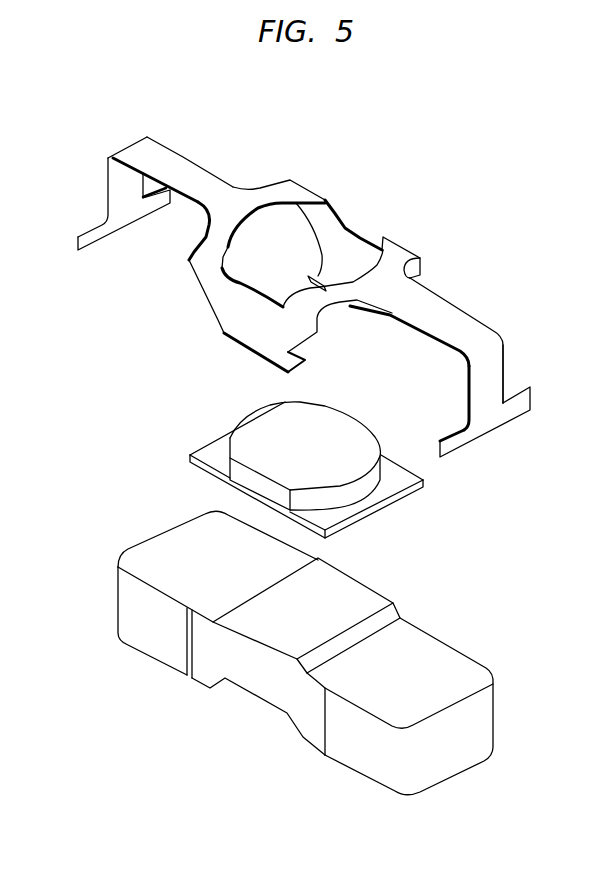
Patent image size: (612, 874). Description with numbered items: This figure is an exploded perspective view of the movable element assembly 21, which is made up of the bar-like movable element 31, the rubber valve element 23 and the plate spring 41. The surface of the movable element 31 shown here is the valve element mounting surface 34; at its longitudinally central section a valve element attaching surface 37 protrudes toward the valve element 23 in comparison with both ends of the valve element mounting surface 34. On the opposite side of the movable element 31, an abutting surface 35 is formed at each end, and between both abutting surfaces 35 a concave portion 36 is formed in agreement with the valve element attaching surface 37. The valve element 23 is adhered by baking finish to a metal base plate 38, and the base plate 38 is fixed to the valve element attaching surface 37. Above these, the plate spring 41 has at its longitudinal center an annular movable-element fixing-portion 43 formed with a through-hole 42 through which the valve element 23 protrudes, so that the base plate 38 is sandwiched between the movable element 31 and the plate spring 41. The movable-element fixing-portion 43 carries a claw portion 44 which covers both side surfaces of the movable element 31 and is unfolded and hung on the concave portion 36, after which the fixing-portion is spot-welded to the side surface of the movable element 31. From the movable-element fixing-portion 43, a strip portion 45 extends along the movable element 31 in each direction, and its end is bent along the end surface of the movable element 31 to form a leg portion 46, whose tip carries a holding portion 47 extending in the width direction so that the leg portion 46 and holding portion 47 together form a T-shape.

The movable element assembly 21 is at (304, 295).
The valve element 23 is at (338, 440).
The movable element 31 is at (260, 653).
The valve element mounting surface 34 is at (421, 667).
The abutting surface 35 is at (155, 658).
The concave portion 36 is at (275, 706).
The valve element attaching surface 37 is at (312, 598).
The base plate 38 is at (200, 480).
The plate spring 41 is at (395, 263).
The through-hole 42 is at (253, 215).
The movable-element fixing-portion 43 is at (233, 203).
The claw portion 44 is at (253, 352).
The strip portion 45 is at (152, 156).
The leg portion 46 is at (128, 183).
The holding portion 47 is at (103, 240).